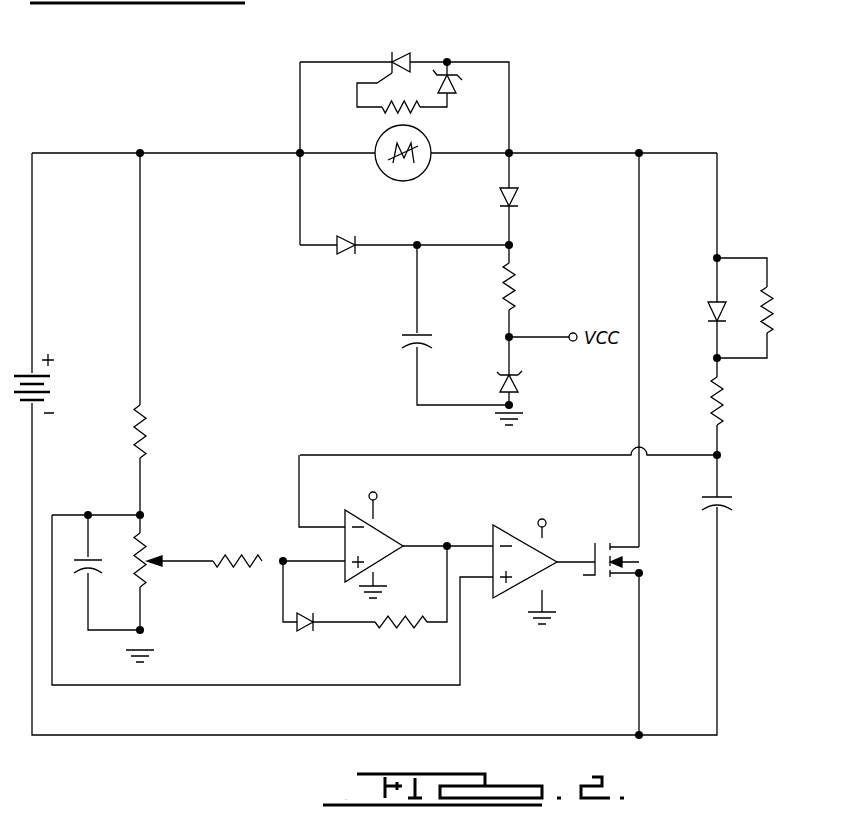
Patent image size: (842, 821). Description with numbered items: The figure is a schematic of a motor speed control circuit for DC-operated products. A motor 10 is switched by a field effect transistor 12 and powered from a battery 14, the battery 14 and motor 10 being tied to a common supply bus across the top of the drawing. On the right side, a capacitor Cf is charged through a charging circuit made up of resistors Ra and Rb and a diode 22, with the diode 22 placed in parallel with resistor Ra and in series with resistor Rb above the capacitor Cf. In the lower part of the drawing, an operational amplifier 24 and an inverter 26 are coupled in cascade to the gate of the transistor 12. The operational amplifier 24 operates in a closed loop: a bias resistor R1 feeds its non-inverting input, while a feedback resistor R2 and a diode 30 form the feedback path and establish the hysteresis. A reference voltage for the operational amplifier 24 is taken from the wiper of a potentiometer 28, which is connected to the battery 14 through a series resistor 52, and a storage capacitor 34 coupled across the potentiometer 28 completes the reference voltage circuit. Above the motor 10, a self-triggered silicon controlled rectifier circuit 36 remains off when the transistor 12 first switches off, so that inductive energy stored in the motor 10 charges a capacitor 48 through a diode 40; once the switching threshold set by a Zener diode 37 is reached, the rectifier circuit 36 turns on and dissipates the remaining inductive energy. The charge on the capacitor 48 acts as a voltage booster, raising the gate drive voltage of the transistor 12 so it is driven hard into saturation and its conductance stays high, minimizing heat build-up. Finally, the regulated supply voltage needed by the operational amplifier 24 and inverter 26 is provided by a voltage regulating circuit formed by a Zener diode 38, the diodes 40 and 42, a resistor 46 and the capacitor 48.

The motor 10 is at (390, 170).
The field effect transistor 12 is at (610, 578).
The battery 14 is at (52, 386).
The diode 22 is at (705, 309).
The operational amplifier 24 is at (385, 545).
The inverter 26 is at (513, 530).
The potentiometer 28 is at (150, 548).
The diode 30 is at (300, 632).
The storage capacitor 34 is at (104, 568).
The self-triggered silicon controlled rectifier circuit 36 is at (417, 53).
The Zener diode 37 is at (458, 89).
The Zener diode 38 is at (520, 386).
The diode 40 is at (343, 252).
The diode 42 is at (518, 195).
The resistor 46 is at (516, 283).
The capacitor 48 is at (400, 336).
The resistor 52 is at (146, 432).
The bias resistor R1 is at (237, 551).
The feedback resistor R2 is at (401, 635).
The resistor Ra is at (763, 295).
The resistor Rb is at (728, 393).
The capacitor Cf is at (735, 502).